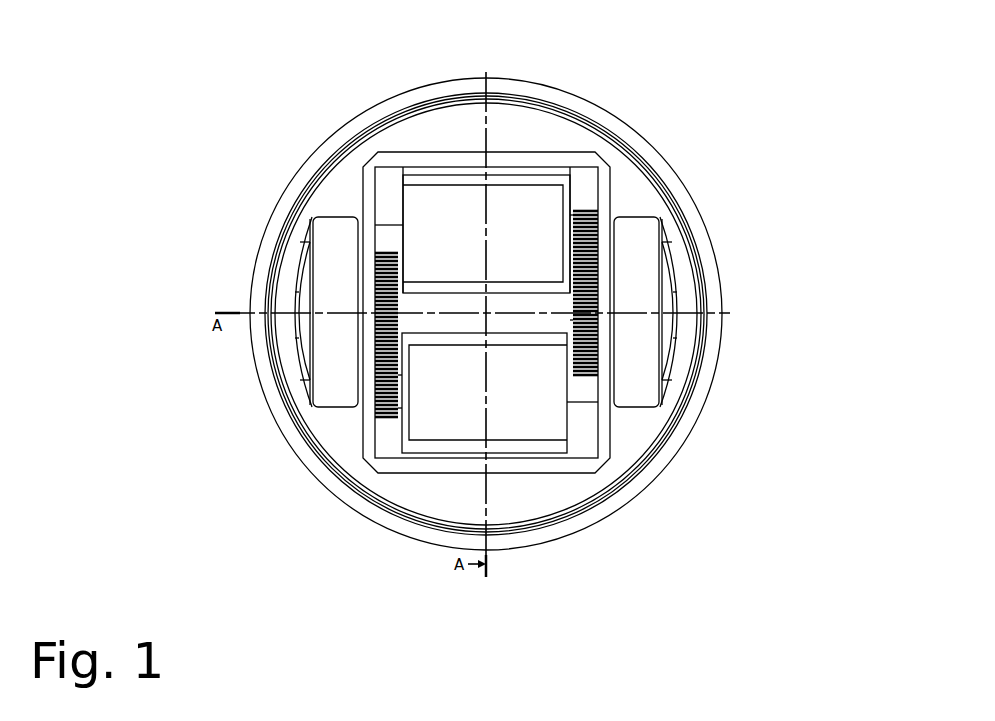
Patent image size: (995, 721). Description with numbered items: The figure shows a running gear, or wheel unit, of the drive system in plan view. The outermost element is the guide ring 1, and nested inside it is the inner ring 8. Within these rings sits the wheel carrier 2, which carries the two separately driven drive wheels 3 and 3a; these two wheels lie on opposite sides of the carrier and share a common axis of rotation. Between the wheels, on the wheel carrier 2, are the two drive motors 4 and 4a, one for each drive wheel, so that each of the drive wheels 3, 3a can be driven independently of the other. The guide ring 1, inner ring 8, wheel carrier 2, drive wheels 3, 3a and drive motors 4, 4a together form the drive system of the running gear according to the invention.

The guide ring 1 is at (672, 183).
The wheel carrier 2 is at (603, 178).
The drive wheel 3 is at (325, 278).
The drive wheel 3a is at (637, 285).
The drive motor 4 is at (513, 400).
The drive motor 4a is at (425, 213).
The inner ring 8 is at (520, 135).